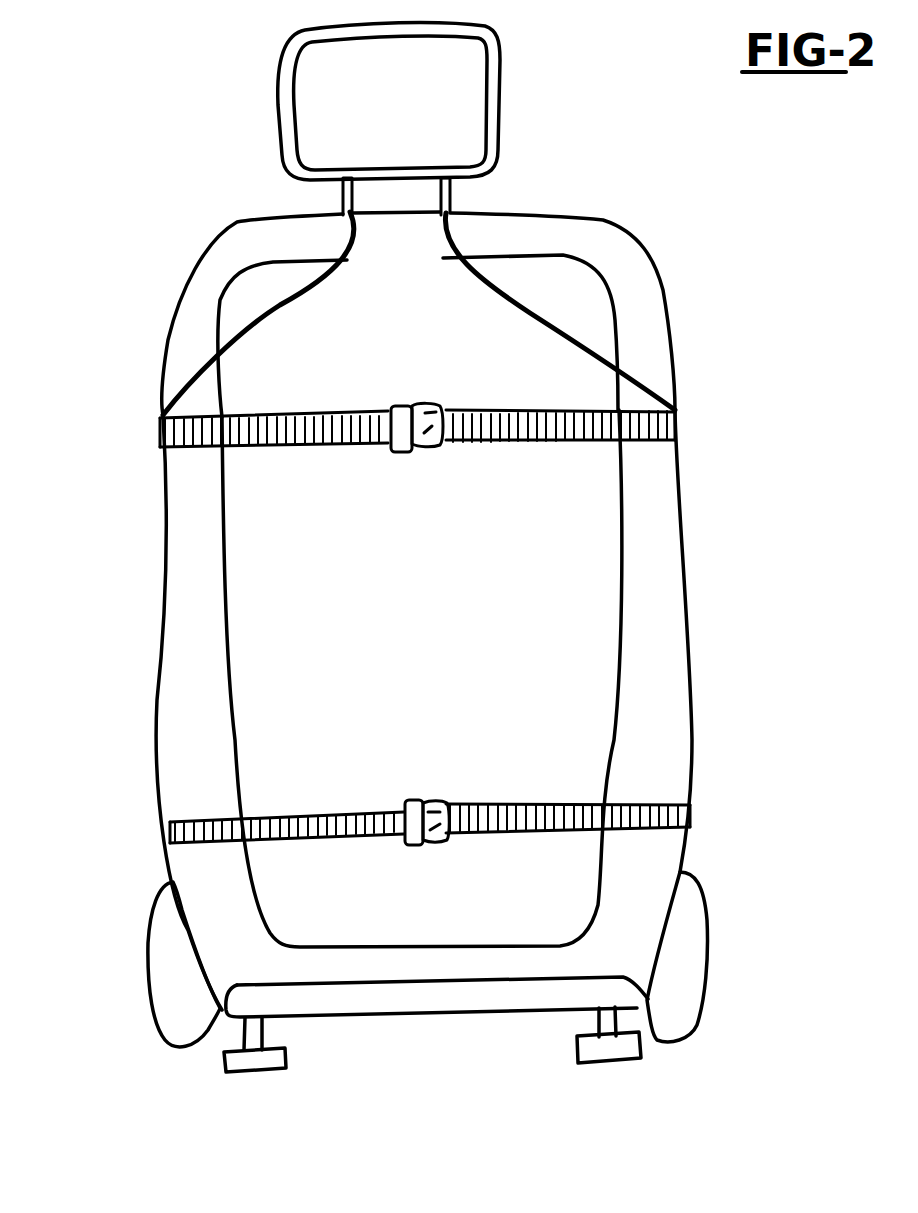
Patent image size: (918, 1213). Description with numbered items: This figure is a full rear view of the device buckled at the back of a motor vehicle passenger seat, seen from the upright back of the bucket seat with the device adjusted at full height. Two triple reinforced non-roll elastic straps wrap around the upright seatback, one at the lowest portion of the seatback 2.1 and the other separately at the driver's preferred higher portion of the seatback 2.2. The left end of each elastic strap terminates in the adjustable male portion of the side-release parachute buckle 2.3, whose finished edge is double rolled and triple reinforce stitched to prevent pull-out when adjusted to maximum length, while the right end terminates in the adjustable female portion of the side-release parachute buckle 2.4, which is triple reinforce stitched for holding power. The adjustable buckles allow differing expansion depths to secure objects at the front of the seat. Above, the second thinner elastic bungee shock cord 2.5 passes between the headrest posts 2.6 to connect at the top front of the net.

The lowest portion of the seatback 2.1 is at (690, 815).
The higher portion of the seatback 2.2 is at (675, 419).
The adjustable male portion of the side-release parachute buckle 2.3 is at (410, 447).
The adjustable female portion of the side-release parachute buckle 2.4 is at (440, 442).
The thinner elastic bungee shock cord 2.5 is at (563, 333).
The headrest posts 2.6 is at (345, 200).